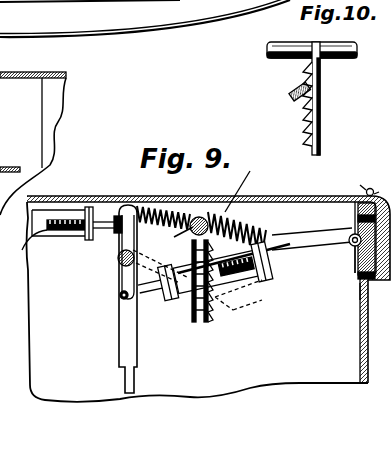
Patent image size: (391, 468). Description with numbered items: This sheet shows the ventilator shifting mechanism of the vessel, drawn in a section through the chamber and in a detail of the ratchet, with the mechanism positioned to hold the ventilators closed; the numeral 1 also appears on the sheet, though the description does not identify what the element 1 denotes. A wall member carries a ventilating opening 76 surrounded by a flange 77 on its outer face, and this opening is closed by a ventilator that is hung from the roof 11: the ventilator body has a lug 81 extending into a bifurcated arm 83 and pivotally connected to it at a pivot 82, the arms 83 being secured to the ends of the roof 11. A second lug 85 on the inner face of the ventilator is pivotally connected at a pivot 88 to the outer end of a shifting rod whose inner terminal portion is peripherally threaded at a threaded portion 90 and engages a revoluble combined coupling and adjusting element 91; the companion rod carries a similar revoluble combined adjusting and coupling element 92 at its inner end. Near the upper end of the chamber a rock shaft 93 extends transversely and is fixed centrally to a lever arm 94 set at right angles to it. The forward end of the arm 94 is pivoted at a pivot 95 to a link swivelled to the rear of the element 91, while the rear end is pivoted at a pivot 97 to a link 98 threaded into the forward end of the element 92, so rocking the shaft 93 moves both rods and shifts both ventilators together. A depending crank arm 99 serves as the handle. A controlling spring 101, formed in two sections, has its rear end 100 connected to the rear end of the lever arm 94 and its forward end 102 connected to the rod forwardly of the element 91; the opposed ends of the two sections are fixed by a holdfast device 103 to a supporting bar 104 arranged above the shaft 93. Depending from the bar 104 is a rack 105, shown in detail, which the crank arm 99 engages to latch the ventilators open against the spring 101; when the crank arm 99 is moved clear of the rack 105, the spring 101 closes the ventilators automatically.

In FIG. 9, the housing 1 is at (369, 341).
In FIG. 9, the roof 11 is at (158, 205).
In FIG. 9, the ventilating opening 76 is at (358, 225).
In FIG. 9, the flange 77 is at (372, 283).
In FIG. 9, the lug 81 is at (376, 191).
In FIG. 9, the pivotal connection 82 is at (370, 188).
In FIG. 9, the bifurcated arm 83 is at (366, 189).
In FIG. 9, the lug 85 is at (368, 245).
In FIG. 9, the pivotal connection 88 is at (352, 246).
In FIG. 9, the peripherally threaded terminal portion 90 is at (254, 280).
In FIG. 9, the combined coupling and adjusting element 91 is at (244, 226).
In FIG. 9, the combined adjusting and coupling element 92 is at (58, 240).
In FIG. 9, the rock shaft 93 is at (119, 262).
In FIG. 9, the lever arm 94 is at (118, 244).
In FIG. 9, the pivotal connection 95 is at (104, 207).
In FIG. 9, the pivotal connection 97 is at (119, 296).
In FIG. 9, the link 98 is at (24, 250).
In FIG. 9, the crank arm 99 is at (137, 338).
In FIG. 10, the crank arm 99 is at (293, 95).
In FIG. 9, the rear end of controlling spring 100 is at (118, 216).
In FIG. 9, the controlling spring 101 is at (244, 185).
In FIG. 9, the forward end of controlling spring 102 is at (274, 248).
In FIG. 9, the holdfast device 103 is at (200, 215).
In FIG. 9, the supporting bar 104 is at (166, 238).
In FIG. 10, the supporting bar 104 is at (284, 44).
In FIG. 9, the rack 105 is at (213, 319).
In FIG. 10, the rack 105 is at (317, 88).